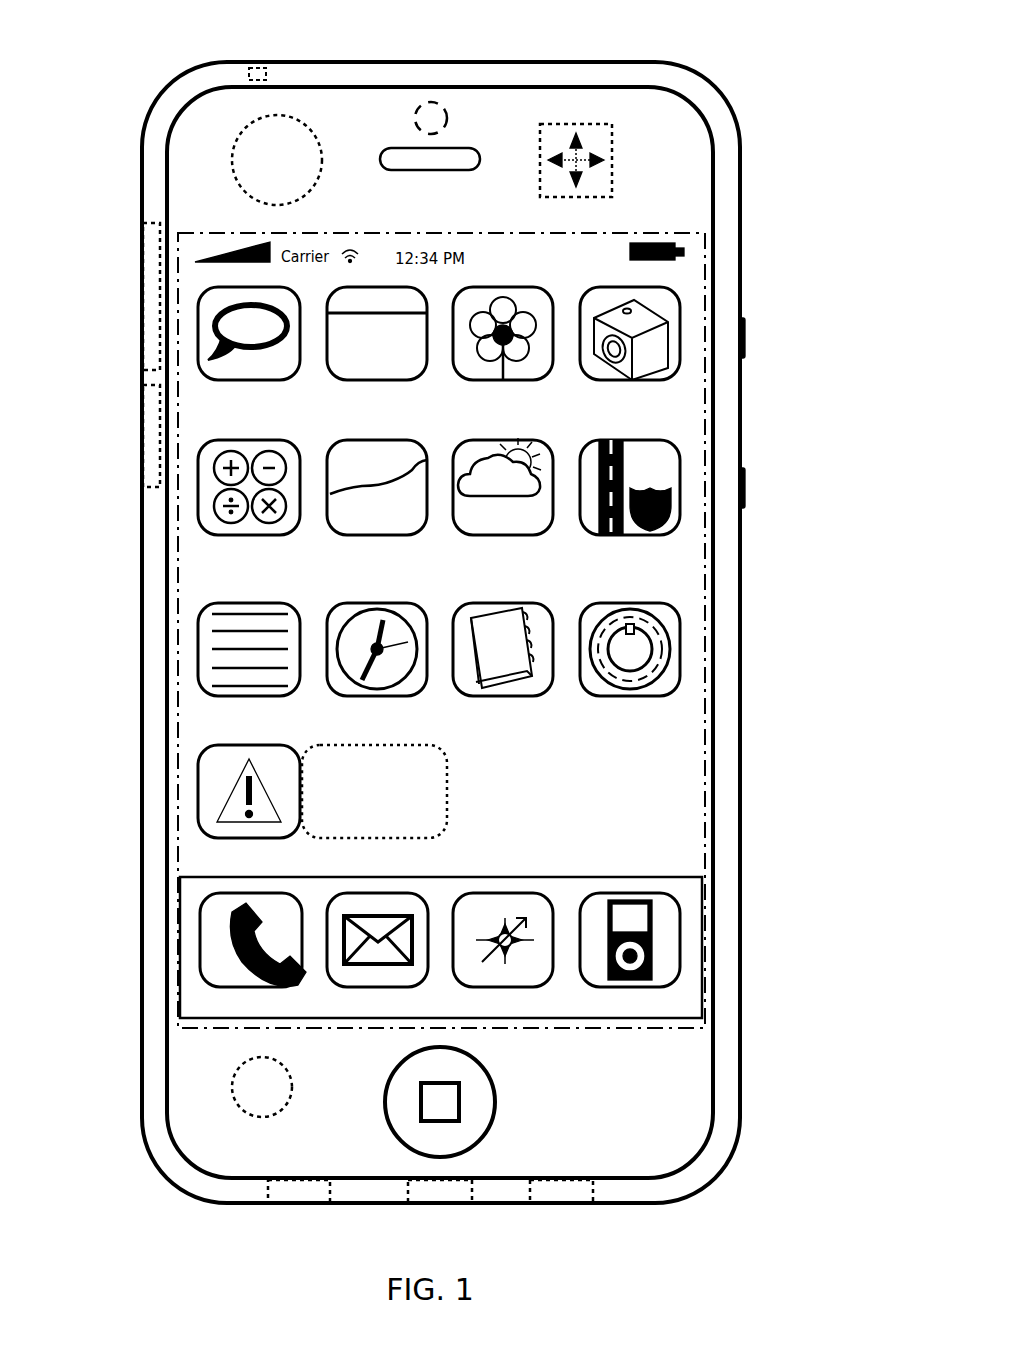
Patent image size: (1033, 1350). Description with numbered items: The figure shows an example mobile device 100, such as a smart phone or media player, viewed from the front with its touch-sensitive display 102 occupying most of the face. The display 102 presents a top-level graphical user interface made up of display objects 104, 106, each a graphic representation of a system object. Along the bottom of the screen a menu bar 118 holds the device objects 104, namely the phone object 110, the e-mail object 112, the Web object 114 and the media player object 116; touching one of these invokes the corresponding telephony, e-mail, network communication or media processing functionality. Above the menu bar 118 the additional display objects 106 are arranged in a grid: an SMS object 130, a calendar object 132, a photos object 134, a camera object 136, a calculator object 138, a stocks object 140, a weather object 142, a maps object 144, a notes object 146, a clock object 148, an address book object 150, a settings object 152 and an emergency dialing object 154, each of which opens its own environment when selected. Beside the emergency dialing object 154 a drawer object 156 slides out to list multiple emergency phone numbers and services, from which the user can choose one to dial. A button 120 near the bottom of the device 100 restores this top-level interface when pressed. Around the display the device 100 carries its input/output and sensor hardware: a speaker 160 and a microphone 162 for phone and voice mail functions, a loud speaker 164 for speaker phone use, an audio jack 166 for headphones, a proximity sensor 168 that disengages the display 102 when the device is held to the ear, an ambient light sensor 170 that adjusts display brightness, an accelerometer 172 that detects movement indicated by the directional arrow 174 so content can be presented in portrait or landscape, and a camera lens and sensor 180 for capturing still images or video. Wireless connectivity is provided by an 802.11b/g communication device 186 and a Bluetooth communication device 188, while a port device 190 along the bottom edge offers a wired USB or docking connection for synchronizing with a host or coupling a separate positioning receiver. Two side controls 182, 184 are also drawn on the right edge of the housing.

The mobile device 100 is at (523, 62).
The touch-sensitive display 102 is at (643, 233).
The display objects 104 is at (692, 890).
The display objects 106 is at (690, 280).
The phone object 110 is at (200, 940).
The e-mail object 112 is at (378, 893).
The Web object 114 is at (503, 893).
The media player object 116 is at (630, 893).
The menu bar 118 is at (585, 1022).
The button 120 is at (496, 1100).
The short messaging service (SMS) object 130 is at (297, 378).
The calendar object 132 is at (425, 378).
The photos object 134 is at (551, 378).
The camera object 136 is at (678, 378).
The calculator object 138 is at (297, 533).
The stocks object 140 is at (425, 533).
The weather object 142 is at (551, 533).
The maps object 144 is at (678, 533).
The notes object 146 is at (297, 694).
The clock object 148 is at (425, 694).
The address book object 150 is at (551, 694).
The settings object 152 is at (678, 694).
The emergency dialing object 154 is at (198, 776).
The drawer object 156 is at (447, 768).
The speaker 160 is at (410, 170).
The microphone 162 is at (330, 1192).
The loud speaker 164 is at (593, 1192).
The audio jack 166 is at (266, 72).
The proximity sensor 168 is at (235, 172).
The ambient light sensor 170 is at (282, 1110).
The accelerometer 172 is at (612, 165).
The directional arrow 174 is at (690, 38).
The camera lens and sensor 180 is at (447, 118).
The volume button 182 is at (745, 338).
The volume button 184 is at (745, 488).
The 802.11b/g communication device 186 is at (145, 223).
The Bluetooth communication device 188 is at (145, 385).
The port device 190 is at (472, 1192).